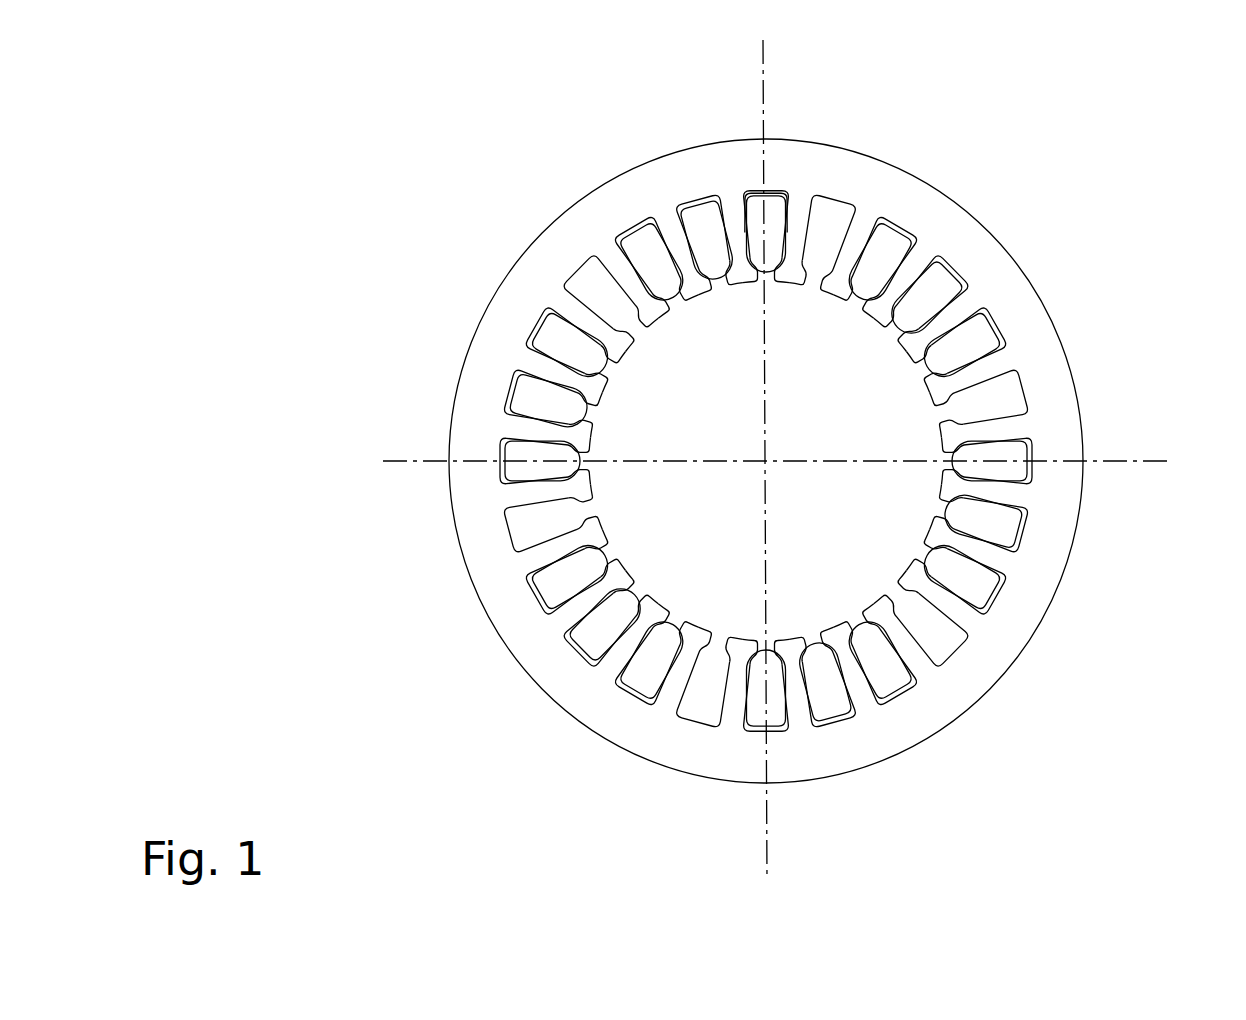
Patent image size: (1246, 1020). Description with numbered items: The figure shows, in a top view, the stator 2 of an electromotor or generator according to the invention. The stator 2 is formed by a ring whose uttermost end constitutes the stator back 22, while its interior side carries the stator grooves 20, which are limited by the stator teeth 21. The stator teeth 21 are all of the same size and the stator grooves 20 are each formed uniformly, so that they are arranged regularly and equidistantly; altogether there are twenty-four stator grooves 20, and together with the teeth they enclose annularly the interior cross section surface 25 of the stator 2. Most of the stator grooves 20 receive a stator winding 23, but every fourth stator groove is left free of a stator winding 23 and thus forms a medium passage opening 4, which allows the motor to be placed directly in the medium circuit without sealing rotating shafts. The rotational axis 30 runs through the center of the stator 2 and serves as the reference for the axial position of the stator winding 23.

The stator 2 is at (960, 243).
The medium passage opening 4 is at (840, 213).
The stator groove 20 is at (817, 203).
The stator tooth 21 is at (993, 430).
The stator back 22 is at (1003, 293).
The stator winding 23 is at (910, 230).
The interior cross section surface 25 is at (705, 527).
The rotational axis 30 is at (766, 461).